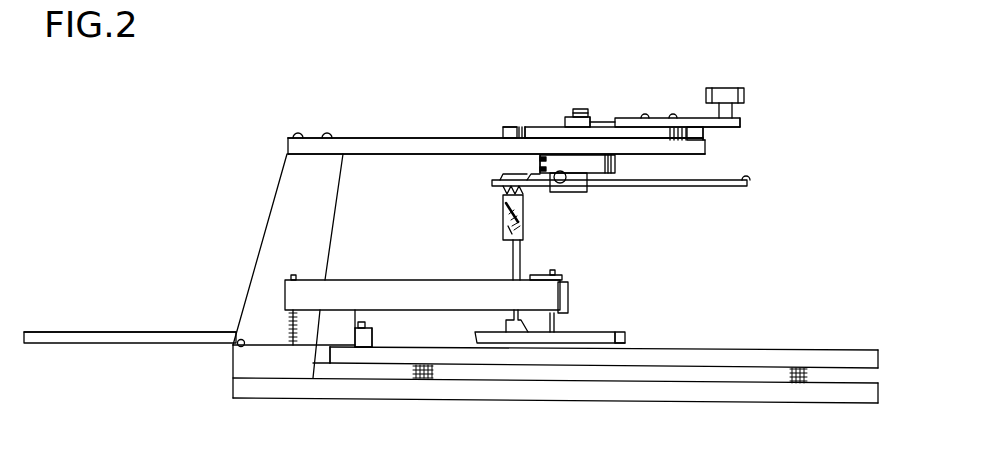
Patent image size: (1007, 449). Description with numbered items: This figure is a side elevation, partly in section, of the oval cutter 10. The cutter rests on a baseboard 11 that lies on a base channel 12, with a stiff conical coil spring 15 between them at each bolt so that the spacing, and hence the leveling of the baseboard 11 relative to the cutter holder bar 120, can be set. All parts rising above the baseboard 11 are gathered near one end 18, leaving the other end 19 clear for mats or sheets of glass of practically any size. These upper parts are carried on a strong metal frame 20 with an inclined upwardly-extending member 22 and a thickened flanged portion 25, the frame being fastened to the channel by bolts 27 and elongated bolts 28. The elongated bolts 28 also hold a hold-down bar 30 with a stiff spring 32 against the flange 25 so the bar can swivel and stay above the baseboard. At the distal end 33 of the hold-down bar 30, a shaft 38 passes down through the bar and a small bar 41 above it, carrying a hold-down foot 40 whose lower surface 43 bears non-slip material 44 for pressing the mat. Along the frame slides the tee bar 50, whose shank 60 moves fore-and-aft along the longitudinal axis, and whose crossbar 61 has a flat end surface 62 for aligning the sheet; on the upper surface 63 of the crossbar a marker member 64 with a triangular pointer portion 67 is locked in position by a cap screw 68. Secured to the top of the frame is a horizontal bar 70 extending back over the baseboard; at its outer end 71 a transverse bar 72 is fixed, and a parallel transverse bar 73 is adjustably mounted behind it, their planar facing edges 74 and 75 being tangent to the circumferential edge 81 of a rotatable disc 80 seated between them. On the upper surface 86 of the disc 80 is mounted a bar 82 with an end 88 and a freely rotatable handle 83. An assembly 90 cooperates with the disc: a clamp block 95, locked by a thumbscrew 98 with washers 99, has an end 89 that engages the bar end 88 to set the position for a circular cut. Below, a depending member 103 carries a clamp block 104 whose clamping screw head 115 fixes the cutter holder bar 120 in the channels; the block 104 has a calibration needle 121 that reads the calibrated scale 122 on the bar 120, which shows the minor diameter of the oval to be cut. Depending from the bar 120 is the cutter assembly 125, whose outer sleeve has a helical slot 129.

The oval cutter 10 is at (265, 82).
The metal frame 20 is at (255, 130).
The sliding tee bar 50 is at (90, 312).
The shank 60 is at (177, 332).
The bolt 27 is at (238, 340).
The upwardly-extending member 22 is at (309, 227).
The thickened and flanged portion 25 is at (277, 373).
The base channel 12 is at (603, 392).
The baseboard 11 is at (858, 350).
The other end of baseboard 19 is at (880, 360).
The one end of baseboard 18 is at (329, 356).
The conical coil spring 15 is at (433, 380).
The horizontal bar 70 is at (418, 138).
The transverse bar 72 is at (708, 139).
The outer end 71 is at (708, 146).
The parallel transverse bar 73 is at (510, 126).
The planar facing edge 75 is at (514, 126).
The upper surface of disc 86 is at (520, 127).
The rotatable disc 80 is at (533, 127).
The circumferential edge 81 is at (546, 133).
The planar facing edge 74 is at (698, 142).
The clamp block 95 is at (566, 110).
The thumbscrew 98 is at (580, 116).
The washers 99 is at (594, 118).
The end of clamp block 89 is at (603, 124).
The end of bar 88 is at (613, 121).
The bar 82 is at (739, 126).
The handle 83 is at (730, 93).
The assembly 90 is at (528, 162).
The depending member 103 is at (613, 165).
The clamp block 104 is at (588, 183).
The head 115 is at (556, 183).
The cutter holder bar 120 is at (698, 186).
The calibrated scale 122 is at (750, 180).
The calibration needle 121 is at (525, 172).
The cutter assembly 125 is at (490, 221).
The helical slot 129 is at (520, 205).
The small bar 41 is at (546, 273).
The hold-down bar 30 is at (500, 306).
The distal end 33 is at (566, 297).
The shaft 38 is at (556, 324).
The lower surface 43 is at (527, 326).
The hold-down foot 40 is at (610, 332).
The material 44 is at (627, 342).
The elongated bolt 28 is at (290, 277).
The stiff spring 32 is at (291, 320).
The upper surface of crossbar 63 is at (364, 306).
The marker member 64 is at (372, 328).
The cap screw 68 is at (358, 325).
The crossbar 61 is at (355, 338).
The flat end surface 62 is at (370, 347).
The pointer portion 67 is at (375, 345).